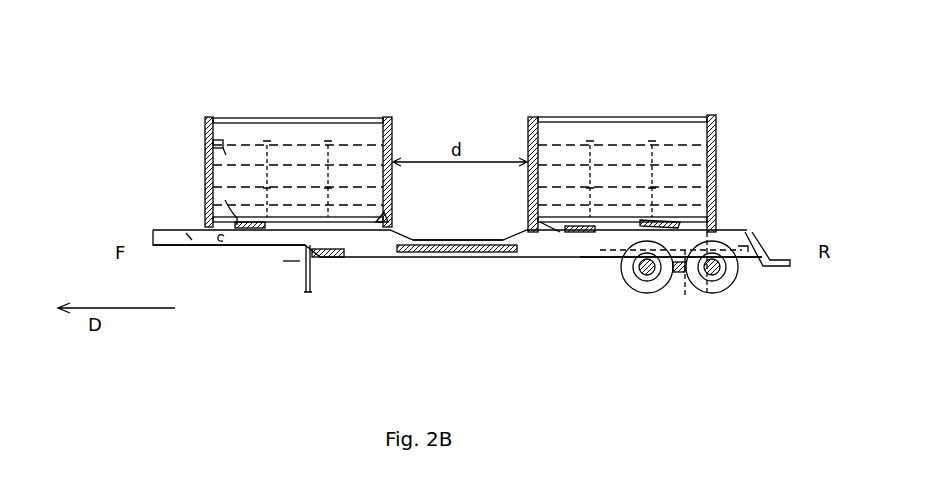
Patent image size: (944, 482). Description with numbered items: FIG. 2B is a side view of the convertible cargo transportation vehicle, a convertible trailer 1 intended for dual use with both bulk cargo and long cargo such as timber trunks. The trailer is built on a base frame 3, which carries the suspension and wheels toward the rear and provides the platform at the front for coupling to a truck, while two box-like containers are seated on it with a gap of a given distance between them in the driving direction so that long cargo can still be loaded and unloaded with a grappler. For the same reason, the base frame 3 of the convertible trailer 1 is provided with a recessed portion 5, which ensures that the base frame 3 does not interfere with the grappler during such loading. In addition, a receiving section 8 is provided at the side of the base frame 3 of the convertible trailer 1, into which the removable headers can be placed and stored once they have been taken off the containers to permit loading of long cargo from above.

The convertible trailer 1 is at (495, 296).
The base frame 3 is at (545, 247).
The recessed portion 5 is at (445, 232).
The receiving section 8 is at (458, 250).